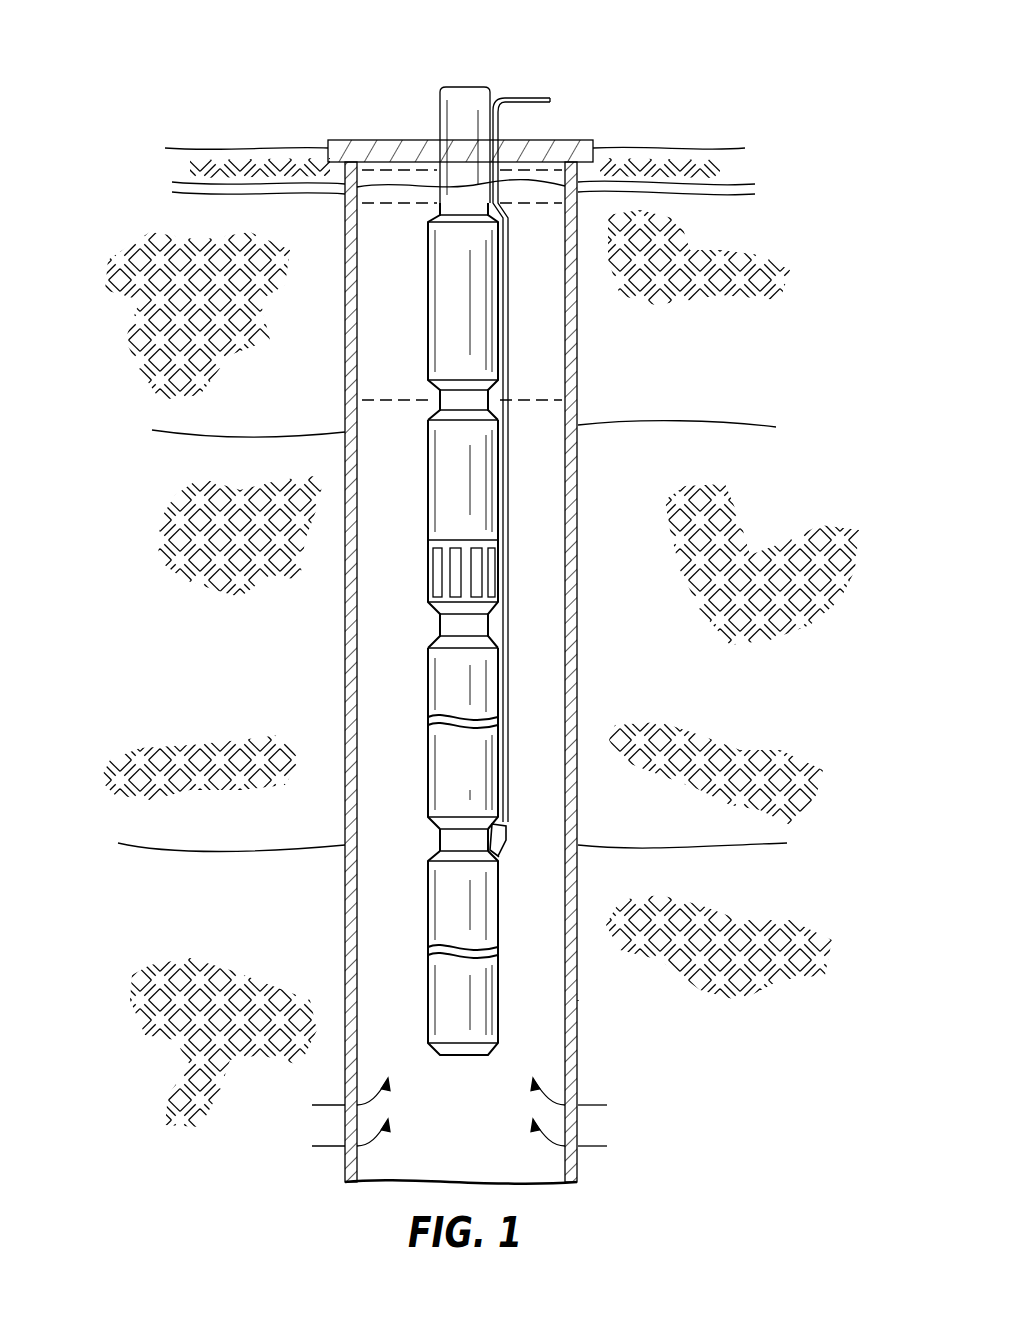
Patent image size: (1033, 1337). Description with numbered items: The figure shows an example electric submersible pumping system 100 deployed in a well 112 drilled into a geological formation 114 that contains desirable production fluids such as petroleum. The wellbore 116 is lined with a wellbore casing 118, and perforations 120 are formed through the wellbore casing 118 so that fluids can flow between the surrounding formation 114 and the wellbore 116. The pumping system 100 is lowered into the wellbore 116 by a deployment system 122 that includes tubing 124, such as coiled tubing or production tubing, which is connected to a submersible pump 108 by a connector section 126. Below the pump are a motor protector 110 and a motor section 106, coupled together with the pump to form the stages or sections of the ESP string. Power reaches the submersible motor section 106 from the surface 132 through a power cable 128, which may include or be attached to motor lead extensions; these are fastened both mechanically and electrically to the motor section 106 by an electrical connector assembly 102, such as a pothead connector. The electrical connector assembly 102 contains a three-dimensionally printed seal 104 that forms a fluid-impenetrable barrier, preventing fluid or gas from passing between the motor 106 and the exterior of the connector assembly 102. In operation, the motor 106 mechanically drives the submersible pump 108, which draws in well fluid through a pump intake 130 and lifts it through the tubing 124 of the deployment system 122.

The electric submersible pumping system 100 is at (148, 84).
The electrical connector assembly 102 is at (500, 858).
The 3D-printed seal 104 is at (540, 838).
The motor section 106 is at (445, 912).
The submersible pump 108 is at (485, 465).
The motor protector 110 is at (485, 680).
The well 112 is at (540, 1010).
The geological formation 114 is at (263, 828).
The wellbore 116 is at (557, 763).
The wellbore casing 118 is at (350, 670).
The perforations 120 is at (325, 1146).
The deployment system 122 is at (400, 92).
The tubing 124 is at (462, 112).
The connector section 126 is at (478, 330).
The power cable 128 is at (497, 128).
The pump intake 130 is at (478, 585).
The surface 132 is at (250, 150).